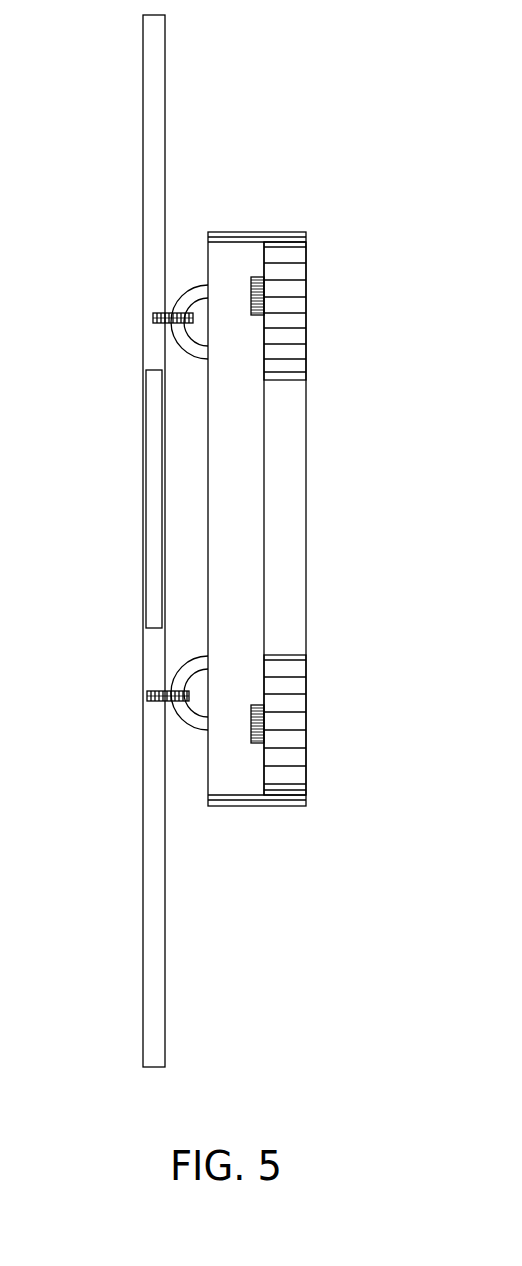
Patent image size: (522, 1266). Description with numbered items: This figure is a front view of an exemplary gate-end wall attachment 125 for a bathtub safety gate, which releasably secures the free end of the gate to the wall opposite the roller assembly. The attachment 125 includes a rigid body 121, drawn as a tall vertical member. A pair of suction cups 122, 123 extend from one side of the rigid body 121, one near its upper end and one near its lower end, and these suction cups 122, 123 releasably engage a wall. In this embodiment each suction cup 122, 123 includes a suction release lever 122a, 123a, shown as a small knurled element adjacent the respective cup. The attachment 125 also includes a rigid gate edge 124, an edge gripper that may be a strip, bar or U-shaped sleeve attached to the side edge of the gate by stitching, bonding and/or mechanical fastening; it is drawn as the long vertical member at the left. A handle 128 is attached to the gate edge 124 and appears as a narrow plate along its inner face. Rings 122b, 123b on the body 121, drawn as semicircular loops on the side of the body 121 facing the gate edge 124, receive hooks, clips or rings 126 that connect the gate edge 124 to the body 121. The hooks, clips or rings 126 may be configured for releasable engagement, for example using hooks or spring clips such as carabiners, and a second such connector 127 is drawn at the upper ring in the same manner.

The rigid body 121 is at (240, 590).
The suction cup 122 is at (306, 310).
The suction release lever 122a is at (252, 300).
The ring 122b is at (183, 313).
The suction cup 123 is at (306, 730).
The suction release lever 123a is at (252, 725).
The ring 123b is at (191, 730).
The gate edge 124 is at (152, 790).
The gate-end wall attachment 125 is at (293, 514).
The hooks, clips or rings 126 is at (153, 700).
The upper hinge pin 127 is at (157, 313).
The handle 128 is at (155, 510).